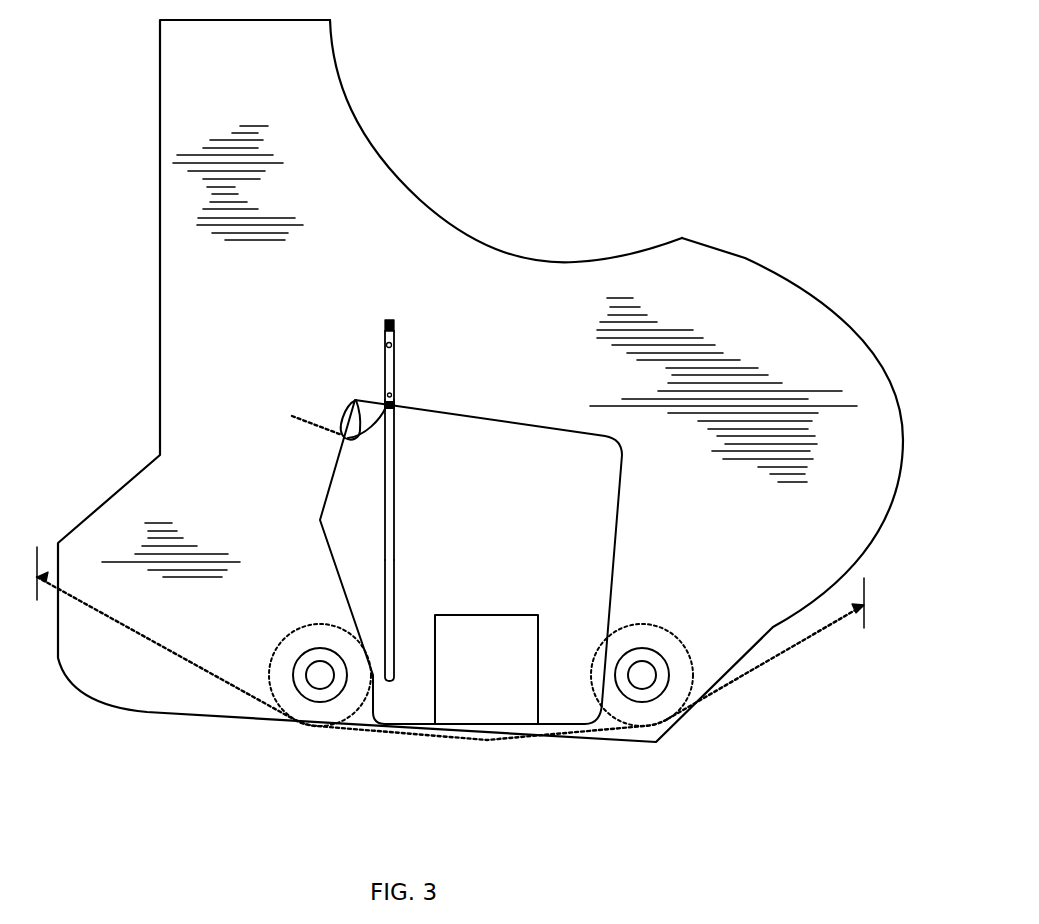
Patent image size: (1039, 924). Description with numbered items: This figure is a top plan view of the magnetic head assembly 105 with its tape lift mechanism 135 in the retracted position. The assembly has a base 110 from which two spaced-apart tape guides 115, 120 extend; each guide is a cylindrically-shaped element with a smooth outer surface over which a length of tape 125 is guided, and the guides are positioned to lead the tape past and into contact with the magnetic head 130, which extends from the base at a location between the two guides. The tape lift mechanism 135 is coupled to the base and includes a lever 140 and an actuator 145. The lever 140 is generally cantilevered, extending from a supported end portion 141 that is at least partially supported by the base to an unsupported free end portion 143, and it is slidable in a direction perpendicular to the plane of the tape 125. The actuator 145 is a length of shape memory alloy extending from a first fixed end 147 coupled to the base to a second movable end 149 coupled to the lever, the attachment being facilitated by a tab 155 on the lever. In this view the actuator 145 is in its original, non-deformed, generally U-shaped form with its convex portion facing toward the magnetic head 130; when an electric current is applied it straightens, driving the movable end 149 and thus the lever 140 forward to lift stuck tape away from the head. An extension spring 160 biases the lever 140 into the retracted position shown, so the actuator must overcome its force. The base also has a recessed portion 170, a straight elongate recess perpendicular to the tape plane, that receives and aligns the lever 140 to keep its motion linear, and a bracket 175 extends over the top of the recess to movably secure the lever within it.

The magnetic head assembly 105 is at (755, 266).
The base 110 is at (492, 250).
The tape guide 115 is at (597, 658).
The tape guide 120 is at (368, 668).
The tape 125 is at (810, 638).
The magnetic head 130 is at (487, 742).
The tape lift mechanism 135 is at (413, 506).
The lever 140 is at (395, 574).
The supported end portion 141 is at (395, 358).
The free end portion 143 is at (395, 534).
The actuator 145 is at (356, 400).
The first fixed end 147 is at (290, 420).
The second movable end 149 is at (395, 413).
The tab 155 is at (396, 406).
The extension spring 160 is at (396, 323).
The recessed portion 170 is at (387, 343).
The bracket 175 is at (385, 397).